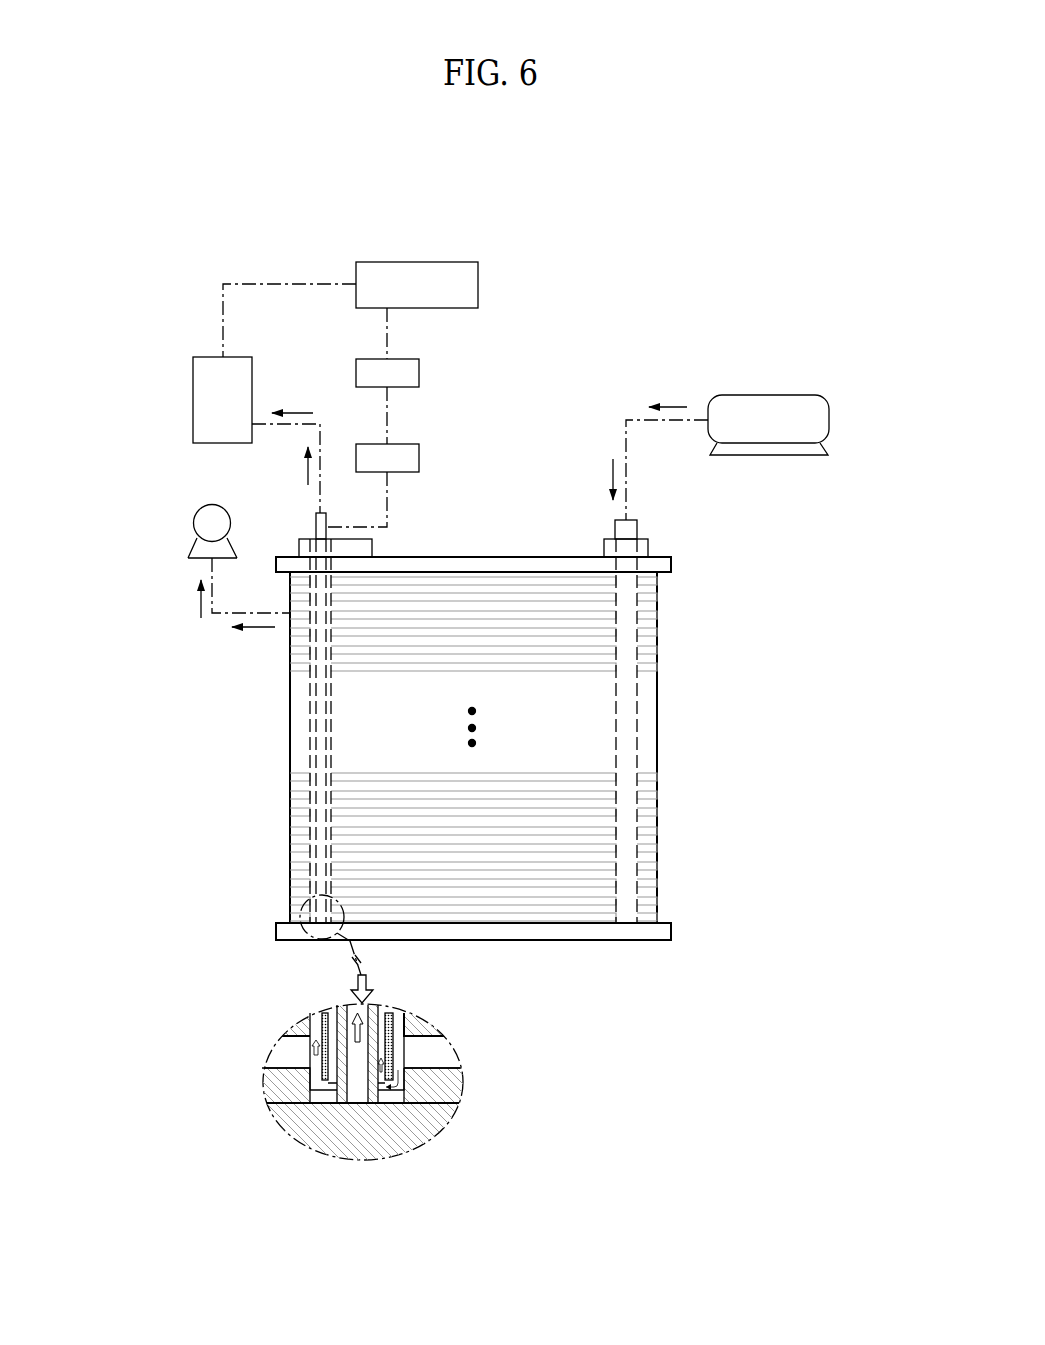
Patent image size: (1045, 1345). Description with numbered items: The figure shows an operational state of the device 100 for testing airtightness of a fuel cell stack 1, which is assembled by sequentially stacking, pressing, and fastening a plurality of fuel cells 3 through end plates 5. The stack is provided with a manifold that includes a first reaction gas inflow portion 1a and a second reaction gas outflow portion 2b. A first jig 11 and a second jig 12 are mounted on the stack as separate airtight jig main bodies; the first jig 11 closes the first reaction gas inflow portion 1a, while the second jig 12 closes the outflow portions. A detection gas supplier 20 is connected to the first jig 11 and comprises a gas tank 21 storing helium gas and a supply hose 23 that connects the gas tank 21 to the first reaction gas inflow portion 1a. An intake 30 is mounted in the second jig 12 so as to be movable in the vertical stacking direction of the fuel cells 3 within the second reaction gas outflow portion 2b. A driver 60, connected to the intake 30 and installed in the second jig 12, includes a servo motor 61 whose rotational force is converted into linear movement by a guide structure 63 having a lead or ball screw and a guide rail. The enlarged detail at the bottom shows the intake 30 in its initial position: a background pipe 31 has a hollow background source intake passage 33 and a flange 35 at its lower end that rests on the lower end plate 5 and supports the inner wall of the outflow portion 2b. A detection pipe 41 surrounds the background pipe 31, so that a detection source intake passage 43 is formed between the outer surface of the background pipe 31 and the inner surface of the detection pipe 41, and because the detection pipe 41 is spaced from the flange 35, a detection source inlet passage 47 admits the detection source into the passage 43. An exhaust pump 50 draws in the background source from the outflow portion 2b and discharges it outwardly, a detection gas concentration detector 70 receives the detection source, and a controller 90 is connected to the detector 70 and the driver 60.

The device for testing airtightness of a fuel cell stack 100 is at (500, 167).
The controller 90 is at (478, 283).
The detection gas concentration detector 70 is at (193, 380).
The driver 60 is at (430, 416).
The servo motor 61 is at (419, 374).
The guide structure 63 is at (413, 458).
The exhaust pump 50 is at (194, 524).
The detection gas supplier 20 is at (721, 398).
The gas tank 21 is at (725, 395).
The supply hose 23 is at (640, 416).
The fuel cell stack 1 is at (493, 749).
The first reaction gas inflow portion 1a is at (637, 740).
The fuel cells 3 is at (292, 666).
The second reaction gas outflow portion 2b is at (310, 757).
The intake 30 is at (314, 722).
The end plates 5 is at (525, 563).
The second jig 12 is at (370, 542).
The first jig 11 is at (646, 548).
The background pipe 31 is at (334, 1068).
The background source intake passage 33 is at (357, 1092).
The flange 35 is at (324, 1091).
The detection pipe 41 is at (397, 1029).
The detection source intake passage 43 is at (389, 1043).
The detection source inlet passage 47 is at (322, 1091).